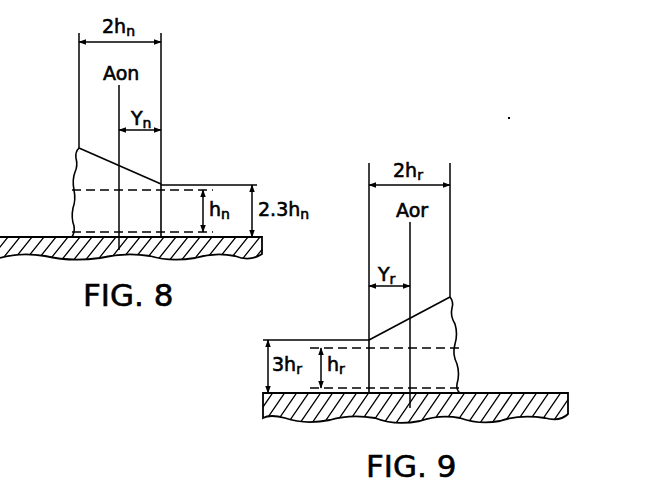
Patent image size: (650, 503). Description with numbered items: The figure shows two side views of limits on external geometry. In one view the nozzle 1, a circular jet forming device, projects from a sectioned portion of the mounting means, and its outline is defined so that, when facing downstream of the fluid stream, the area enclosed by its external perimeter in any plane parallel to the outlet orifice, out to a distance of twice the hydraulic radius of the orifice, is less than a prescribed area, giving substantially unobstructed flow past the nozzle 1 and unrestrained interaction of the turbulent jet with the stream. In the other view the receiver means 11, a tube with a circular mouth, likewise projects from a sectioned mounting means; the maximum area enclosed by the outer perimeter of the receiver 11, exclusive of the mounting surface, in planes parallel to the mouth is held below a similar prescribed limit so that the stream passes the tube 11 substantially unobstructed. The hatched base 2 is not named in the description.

In FIG. 8, the nozzle 1 is at (79, 165).
In FIG. 8, the tooth body / blade base 2 is at (138, 255).
In FIG. 9, the receiver tube 11 is at (432, 332).